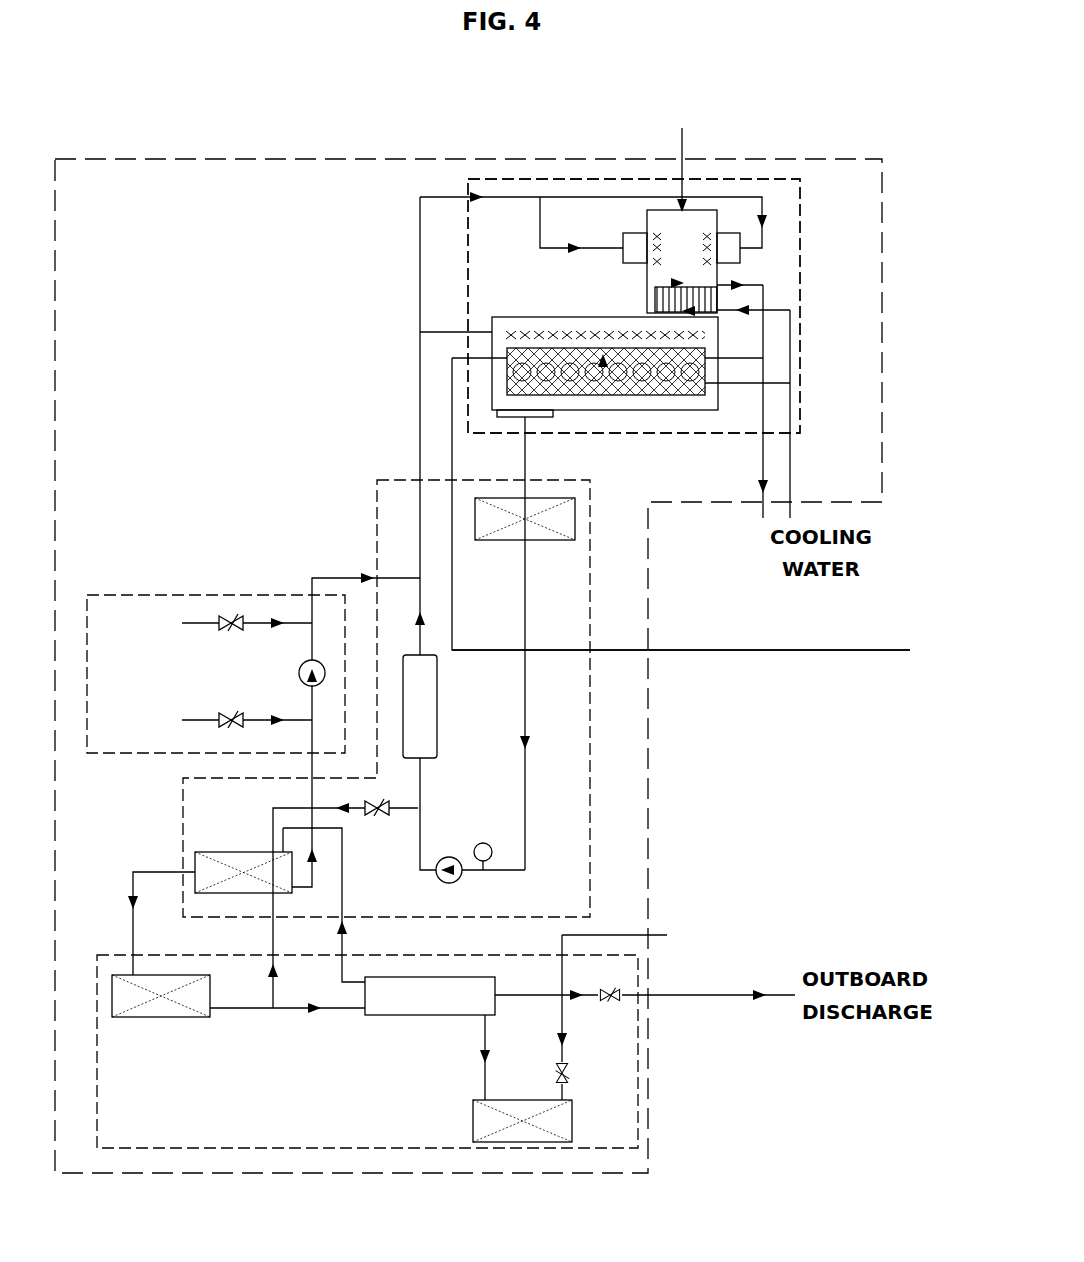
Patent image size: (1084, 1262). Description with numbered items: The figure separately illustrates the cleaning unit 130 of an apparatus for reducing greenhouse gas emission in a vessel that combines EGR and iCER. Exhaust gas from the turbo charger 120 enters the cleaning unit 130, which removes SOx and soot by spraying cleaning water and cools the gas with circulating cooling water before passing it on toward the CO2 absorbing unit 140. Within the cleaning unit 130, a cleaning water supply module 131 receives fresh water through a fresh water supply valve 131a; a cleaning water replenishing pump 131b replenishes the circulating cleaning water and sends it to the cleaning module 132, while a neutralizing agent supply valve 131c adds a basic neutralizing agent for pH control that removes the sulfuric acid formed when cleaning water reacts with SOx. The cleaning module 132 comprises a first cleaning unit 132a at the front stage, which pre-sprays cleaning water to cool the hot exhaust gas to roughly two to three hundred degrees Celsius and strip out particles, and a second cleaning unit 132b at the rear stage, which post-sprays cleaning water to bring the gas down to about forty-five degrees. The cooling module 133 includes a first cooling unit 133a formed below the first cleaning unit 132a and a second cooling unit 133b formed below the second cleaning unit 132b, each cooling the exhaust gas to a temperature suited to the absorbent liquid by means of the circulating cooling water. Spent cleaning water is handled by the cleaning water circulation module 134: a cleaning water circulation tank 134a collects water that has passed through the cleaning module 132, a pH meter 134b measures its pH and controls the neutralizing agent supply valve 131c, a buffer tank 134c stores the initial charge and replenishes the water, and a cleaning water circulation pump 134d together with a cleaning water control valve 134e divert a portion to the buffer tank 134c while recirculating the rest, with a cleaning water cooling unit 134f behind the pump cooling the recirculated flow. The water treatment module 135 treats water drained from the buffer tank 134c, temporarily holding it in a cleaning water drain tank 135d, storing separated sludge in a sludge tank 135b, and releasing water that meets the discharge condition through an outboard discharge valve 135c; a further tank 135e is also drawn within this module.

The turbo charger 120 is at (681, 161).
The cleaning unit 130 is at (468, 654).
The cleaning water supply module 131 is at (216, 664).
The fresh water supply valve 131a is at (247, 730).
The cleaning water replenishing pump 131b is at (289, 673).
The neutralizing agent supply valve 131c is at (247, 633).
The cleaning module 132 is at (667, 306).
The cooling module 133 is at (634, 306).
The first cleaning unit 132a is at (681, 261).
The second cleaning unit 132b is at (623, 367).
The first cooling unit 133a is at (655, 292).
The second cooling unit 133b is at (603, 383).
The cleaning water circulation module 134 is at (403, 698).
The cleaning water circulation tank 134a is at (525, 519).
The pH meter 134b is at (481, 847).
The buffer tank 134c is at (274, 774).
The cleaning water circulation pump 134d is at (445, 881).
The cleaning water control valve 134e is at (343, 903).
The cleaning water cooling unit 134f is at (436, 706).
The water treatment module 135 is at (367, 1051).
The sludge tank 135b is at (522, 1121).
The outboard discharge valve 135c is at (645, 1004).
The cleaning water drain tank 135d is at (238, 996).
The treatment tank 135e is at (430, 1038).
The CO2 absorbing unit 140 is at (698, 794).